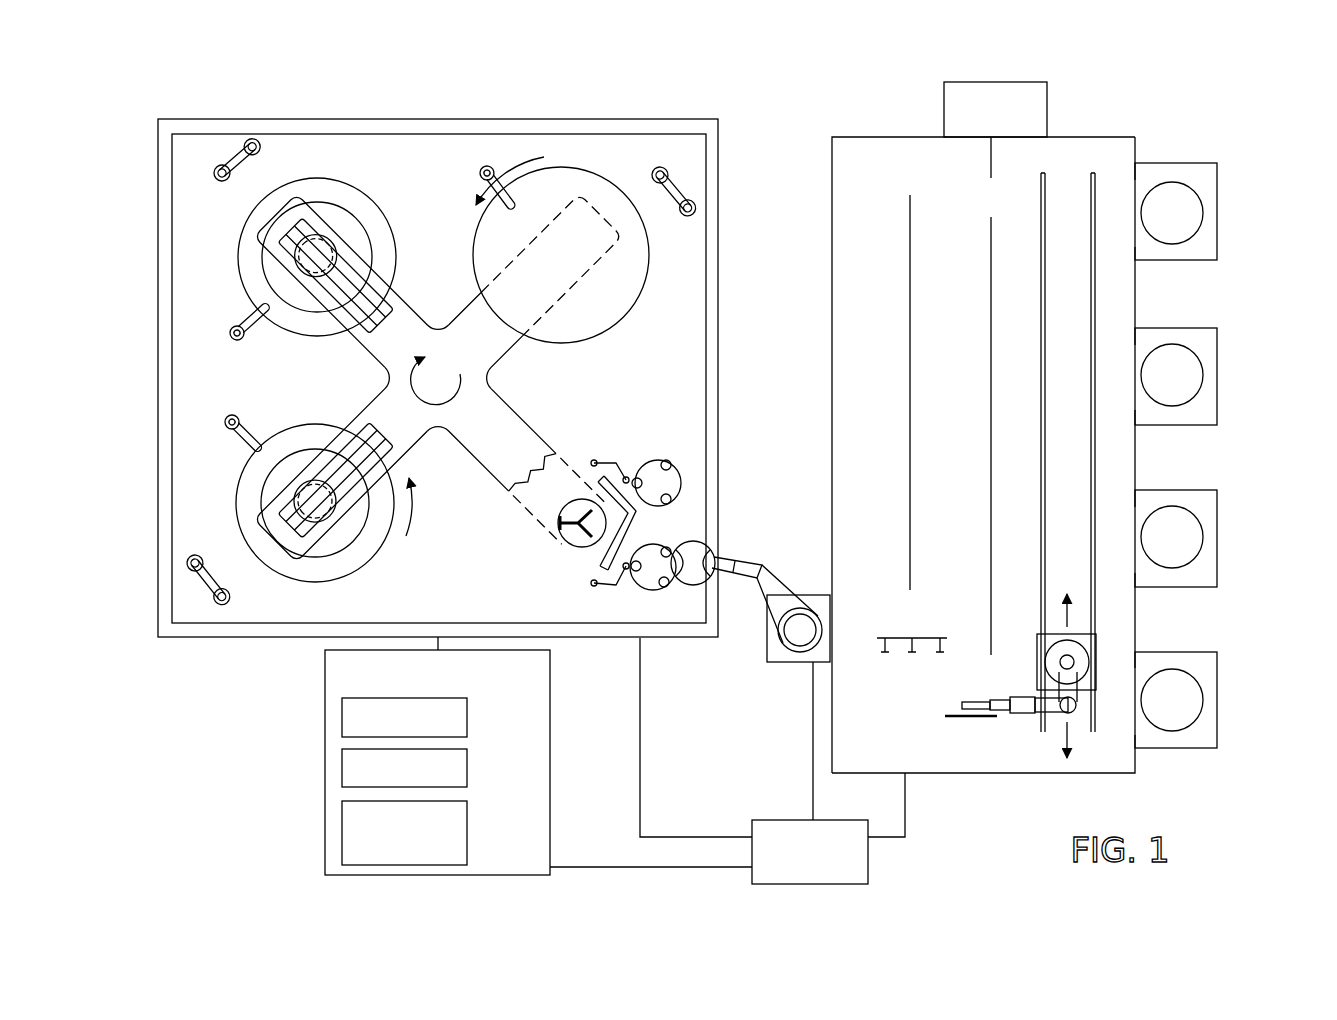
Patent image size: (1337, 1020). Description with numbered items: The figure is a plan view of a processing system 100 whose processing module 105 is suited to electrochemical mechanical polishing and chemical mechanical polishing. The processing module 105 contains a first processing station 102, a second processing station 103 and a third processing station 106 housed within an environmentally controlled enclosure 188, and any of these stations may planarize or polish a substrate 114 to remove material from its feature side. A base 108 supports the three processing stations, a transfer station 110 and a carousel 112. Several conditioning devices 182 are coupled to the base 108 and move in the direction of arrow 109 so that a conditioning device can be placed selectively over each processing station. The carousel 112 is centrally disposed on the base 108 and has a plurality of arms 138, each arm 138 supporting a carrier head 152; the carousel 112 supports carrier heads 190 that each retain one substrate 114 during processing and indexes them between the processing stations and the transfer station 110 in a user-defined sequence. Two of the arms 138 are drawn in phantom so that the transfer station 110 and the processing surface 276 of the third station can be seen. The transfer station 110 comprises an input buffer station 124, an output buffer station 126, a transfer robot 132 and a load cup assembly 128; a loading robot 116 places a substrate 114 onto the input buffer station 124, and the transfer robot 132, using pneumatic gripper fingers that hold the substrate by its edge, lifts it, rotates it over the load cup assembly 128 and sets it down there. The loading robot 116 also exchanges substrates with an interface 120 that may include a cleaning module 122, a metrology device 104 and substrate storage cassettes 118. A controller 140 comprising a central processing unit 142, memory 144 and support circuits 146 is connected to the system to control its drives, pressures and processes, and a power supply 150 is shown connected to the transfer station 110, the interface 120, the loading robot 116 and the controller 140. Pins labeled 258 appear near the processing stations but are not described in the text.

The processing system 100 is at (217, 711).
The first processing station 102 is at (243, 536).
The second processing station 103 is at (284, 174).
The metrology device 104 is at (1040, 66).
The processing module 105 is at (205, 616).
The third processing station 106 is at (593, 162).
The base 108 is at (158, 398).
The arrow 109 is at (220, 518).
The transfer station 110 is at (438, 344).
The carousel 112 is at (505, 353).
The substrate 114 is at (690, 587).
The loading robot 116 is at (784, 668).
The substrate storage cassette 118 is at (1217, 242).
The interface 120 is at (797, 767).
The cleaning module 122 is at (866, 386).
The input buffer station 124 is at (652, 590).
The output buffer station 126 is at (657, 460).
The load cup assembly 128 is at (576, 540).
The transfer robot 132 is at (632, 524).
The arm 138 is at (399, 299).
The controller 140 is at (472, 756).
The central processing unit 142 is at (467, 718).
The memory 144 is at (467, 770).
The support circuits 146 is at (467, 832).
The power supply 150 is at (868, 869).
The carrier head 152 is at (334, 240).
The conditioning device 182 is at (226, 157).
The environmentally controlled enclosure 188 is at (511, 118).
The carrier head 190 is at (268, 277).
The pin 258 is at (485, 173).
The processing surface 276 is at (625, 268).